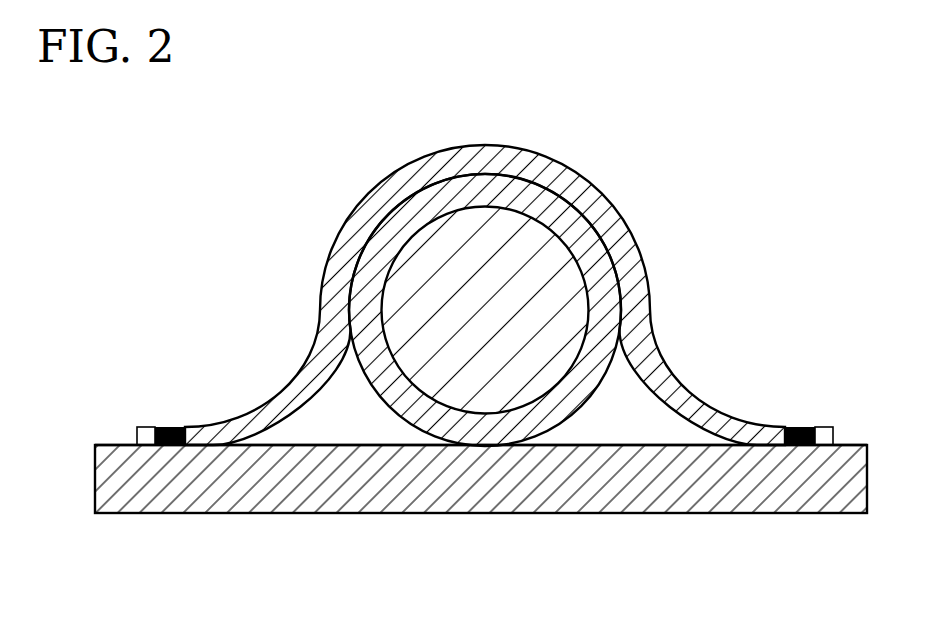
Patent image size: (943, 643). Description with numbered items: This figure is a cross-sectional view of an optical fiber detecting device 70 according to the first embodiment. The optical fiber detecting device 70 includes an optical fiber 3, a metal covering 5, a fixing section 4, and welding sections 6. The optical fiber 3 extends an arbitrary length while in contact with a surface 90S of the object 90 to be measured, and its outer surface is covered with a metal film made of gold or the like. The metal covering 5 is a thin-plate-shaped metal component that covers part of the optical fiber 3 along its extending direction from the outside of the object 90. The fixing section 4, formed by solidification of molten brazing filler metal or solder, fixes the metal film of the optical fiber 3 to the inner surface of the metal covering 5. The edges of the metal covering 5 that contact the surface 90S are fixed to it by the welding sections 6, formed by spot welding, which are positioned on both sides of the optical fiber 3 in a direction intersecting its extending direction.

The optical fiber detecting device 70 is at (126, 131).
The optical fiber 3 is at (447, 243).
The fixing section 4 is at (588, 254).
The metal covering 5 is at (560, 178).
The welding sections 6 is at (172, 426).
The object to be measured 90 is at (223, 492).
The surface of the object 90S is at (335, 446).